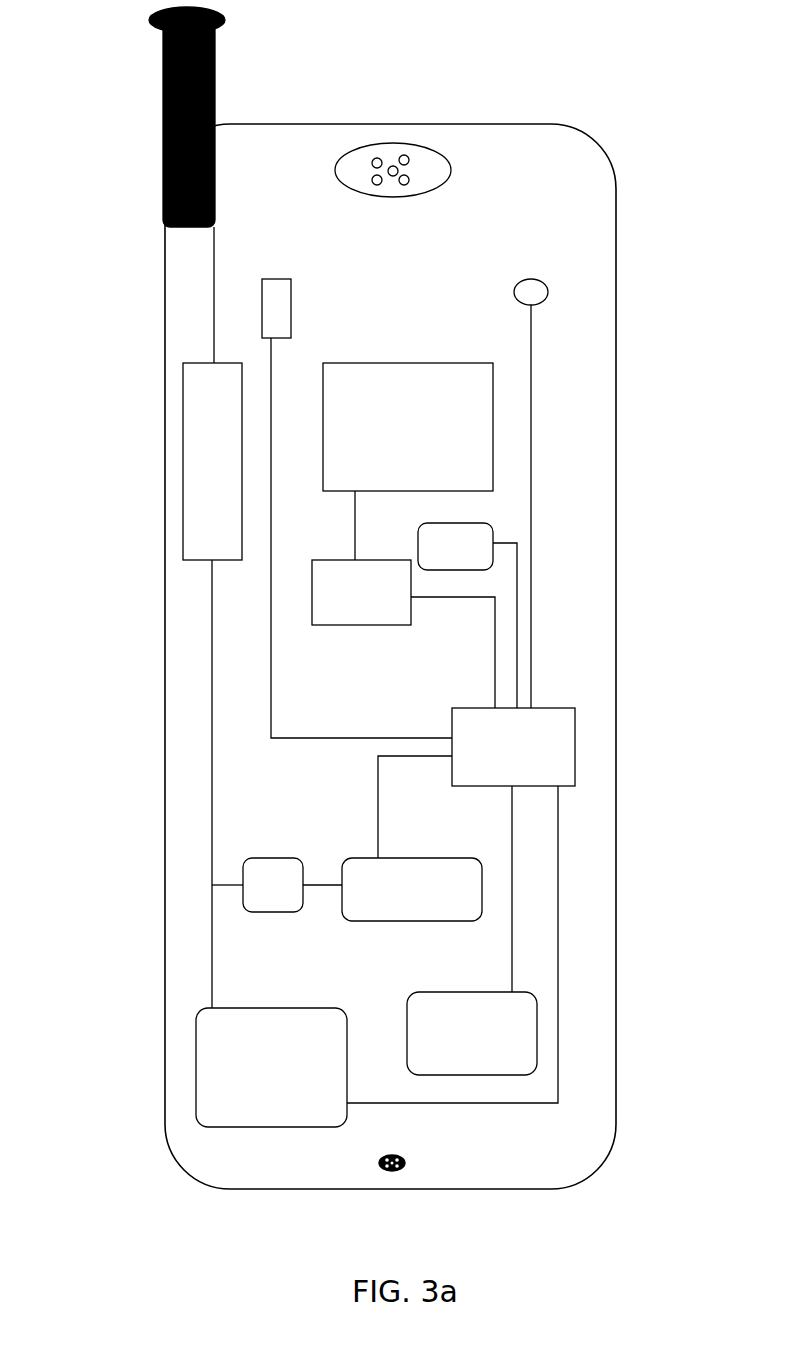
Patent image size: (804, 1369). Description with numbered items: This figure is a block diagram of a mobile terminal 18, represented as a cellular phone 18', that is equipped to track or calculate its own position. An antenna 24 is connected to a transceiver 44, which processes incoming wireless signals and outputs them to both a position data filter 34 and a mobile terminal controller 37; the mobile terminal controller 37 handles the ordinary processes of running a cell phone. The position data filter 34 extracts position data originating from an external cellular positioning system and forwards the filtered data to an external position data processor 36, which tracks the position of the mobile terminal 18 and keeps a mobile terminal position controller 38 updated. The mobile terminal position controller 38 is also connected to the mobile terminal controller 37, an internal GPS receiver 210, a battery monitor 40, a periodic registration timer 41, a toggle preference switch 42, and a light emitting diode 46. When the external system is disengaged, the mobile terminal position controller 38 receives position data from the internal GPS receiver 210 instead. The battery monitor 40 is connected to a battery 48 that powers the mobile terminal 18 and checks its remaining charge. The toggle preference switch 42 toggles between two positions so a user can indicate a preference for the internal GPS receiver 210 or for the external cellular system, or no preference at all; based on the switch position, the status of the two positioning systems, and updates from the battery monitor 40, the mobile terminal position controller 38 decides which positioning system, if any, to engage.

The mobile terminal 18 is at (381, 656).
The cellular phone 18' is at (442, 656).
The antenna 24 is at (215, 43).
The position data filter 34 is at (277, 885).
The external position data processor 36 is at (412, 838).
The mobile terminal controller 37 is at (271, 1067).
The mobile terminal position controller 38 is at (461, 905).
The battery monitor 40 is at (403, 634).
The periodic registration timer 41 is at (467, 615).
The toggle preference switch 42 is at (296, 288).
The transceiver 44 is at (212, 685).
The light emitting diode 46 is at (548, 296).
The battery 48 is at (408, 461).
The internal GPS receiver 210 is at (472, 1033).